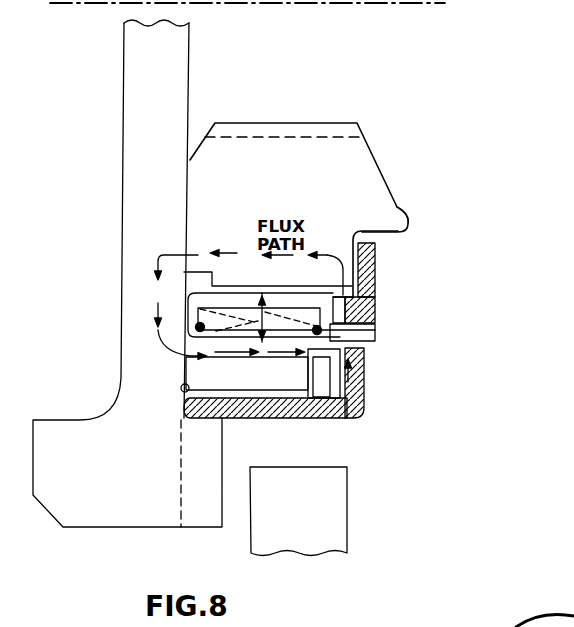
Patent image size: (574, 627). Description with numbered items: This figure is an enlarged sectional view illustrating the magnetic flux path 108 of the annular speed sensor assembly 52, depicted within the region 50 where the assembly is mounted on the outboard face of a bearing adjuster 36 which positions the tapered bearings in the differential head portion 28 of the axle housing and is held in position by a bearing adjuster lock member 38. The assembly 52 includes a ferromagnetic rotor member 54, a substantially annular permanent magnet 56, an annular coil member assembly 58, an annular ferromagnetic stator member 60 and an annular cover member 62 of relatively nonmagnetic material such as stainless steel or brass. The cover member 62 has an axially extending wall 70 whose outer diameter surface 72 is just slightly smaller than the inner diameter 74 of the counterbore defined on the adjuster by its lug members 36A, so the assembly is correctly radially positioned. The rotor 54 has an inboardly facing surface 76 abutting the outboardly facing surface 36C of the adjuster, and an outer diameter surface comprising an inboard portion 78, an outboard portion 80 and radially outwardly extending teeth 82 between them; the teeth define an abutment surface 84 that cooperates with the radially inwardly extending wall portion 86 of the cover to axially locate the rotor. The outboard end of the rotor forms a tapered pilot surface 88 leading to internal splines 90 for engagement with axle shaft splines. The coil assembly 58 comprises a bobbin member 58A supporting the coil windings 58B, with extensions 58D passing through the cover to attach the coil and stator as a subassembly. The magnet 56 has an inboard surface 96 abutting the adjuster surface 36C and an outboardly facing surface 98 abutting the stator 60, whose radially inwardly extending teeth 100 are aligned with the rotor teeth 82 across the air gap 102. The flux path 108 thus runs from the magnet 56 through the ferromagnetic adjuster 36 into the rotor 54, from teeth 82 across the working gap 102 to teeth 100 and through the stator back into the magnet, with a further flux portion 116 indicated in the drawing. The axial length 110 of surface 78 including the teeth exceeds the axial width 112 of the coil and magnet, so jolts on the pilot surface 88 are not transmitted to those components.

The differential head portion 28 is at (97, 0).
The speed sensor assembly 50 is at (276, 77).
The internal splines 90 is at (328, 130).
The speed sensor assembly 52 is at (400, 135).
The pilot surface 88 is at (378, 160).
The inboardly facing surface 76 is at (196, 190).
The inboard portion 78 is at (206, 270).
The coil windings 58B is at (315, 283).
The abutment surface 84 is at (350, 257).
The rotor member 54 is at (399, 209).
The outboard portion 80 is at (397, 233).
The teeth 82 is at (378, 263).
The air gap 102 is at (377, 291).
The bobbin member 58A is at (330, 302).
The stator teeth 100 is at (376, 311).
The extensions 58D is at (377, 334).
The stator member 60 is at (366, 360).
The radially inwardly extending wall portion 86 is at (366, 374).
The outboardly facing surface 98 is at (365, 393).
The cover member 62 is at (365, 418).
The axial length 110 is at (205, 250).
The flux path 108 is at (150, 297).
The pivot 116 is at (196, 323).
The axial width 112 is at (217, 347).
The inboard surface 96 is at (180, 364).
The outboardly facing surface 36C is at (181, 388).
The inner diameter 74 is at (183, 411).
The outer diameter surface 72 is at (230, 419).
The axially extending wall 70 is at (276, 412).
The permanent magnet 56 is at (305, 403).
The coil member assembly 58 is at (328, 410).
The bearing adjuster 36 is at (110, 500).
The lug members 36A is at (202, 500).
The bearing adjuster lock member 38 is at (352, 482).